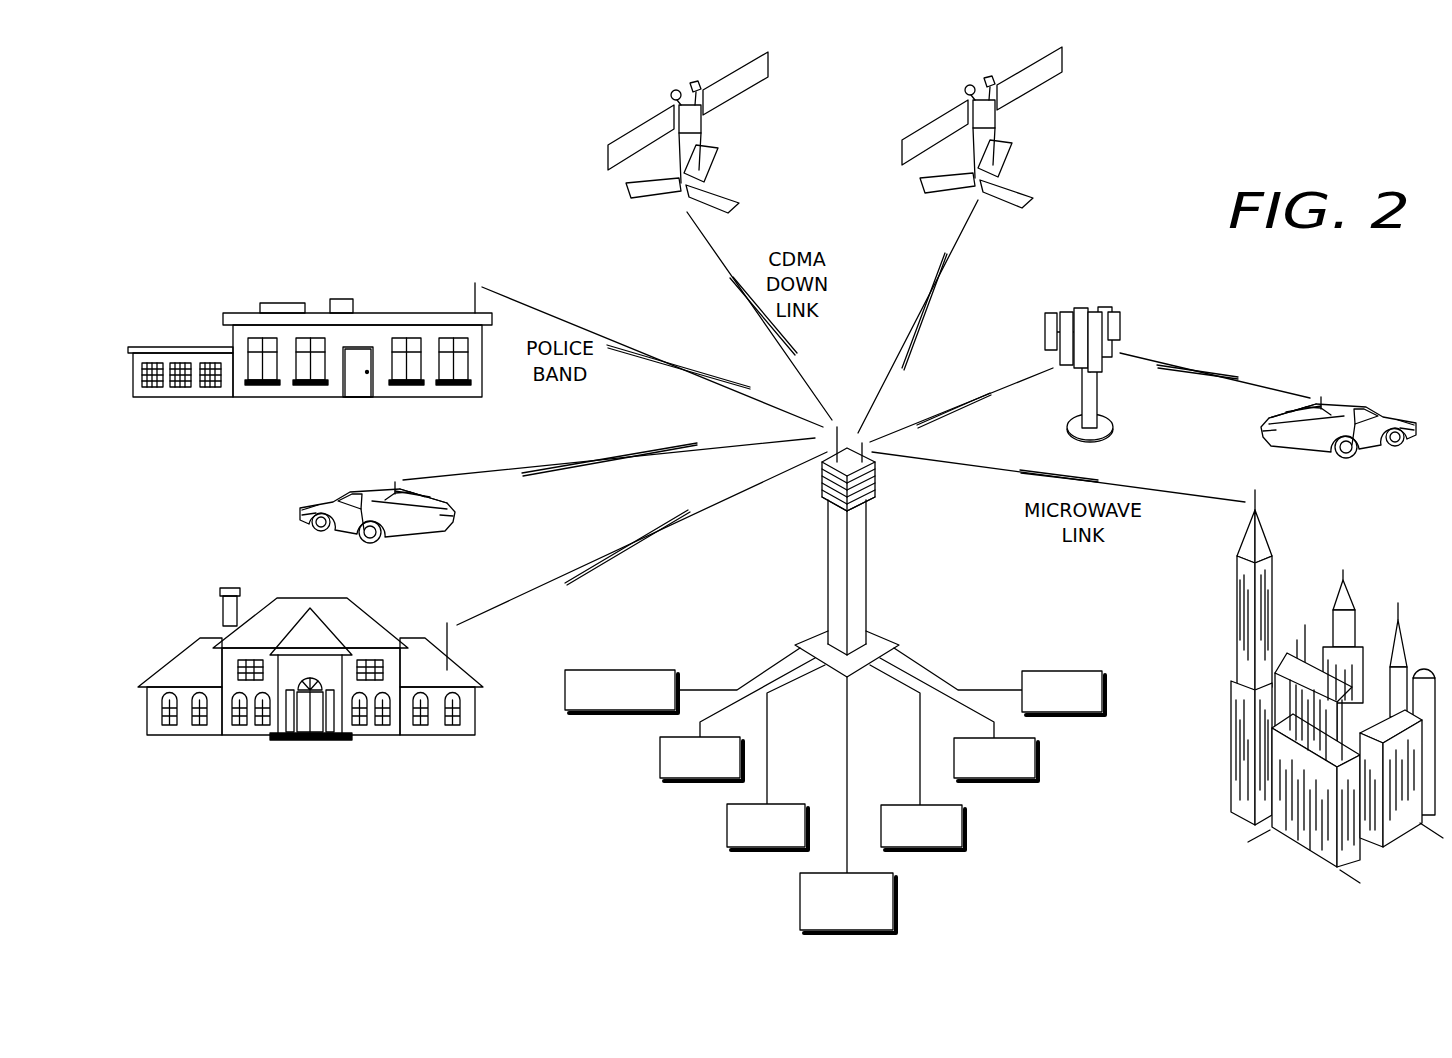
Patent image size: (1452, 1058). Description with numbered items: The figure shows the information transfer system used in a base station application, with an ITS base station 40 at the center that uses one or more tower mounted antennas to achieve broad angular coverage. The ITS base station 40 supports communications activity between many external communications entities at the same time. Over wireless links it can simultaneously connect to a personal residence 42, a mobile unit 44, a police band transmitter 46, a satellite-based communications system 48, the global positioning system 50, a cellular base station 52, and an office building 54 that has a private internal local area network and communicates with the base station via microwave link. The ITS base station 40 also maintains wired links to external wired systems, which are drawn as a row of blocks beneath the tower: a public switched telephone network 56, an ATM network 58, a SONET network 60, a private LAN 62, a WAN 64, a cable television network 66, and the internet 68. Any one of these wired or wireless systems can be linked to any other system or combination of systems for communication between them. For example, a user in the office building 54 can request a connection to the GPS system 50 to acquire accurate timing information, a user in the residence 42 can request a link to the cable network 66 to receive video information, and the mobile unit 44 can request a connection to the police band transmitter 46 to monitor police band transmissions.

The ITS base station 40 is at (832, 575).
The personal residence 42 is at (210, 725).
The mobile unit 44 is at (358, 495).
The police band transmitter 46 is at (400, 318).
The satellite-based communications system 48 is at (618, 152).
The global positioning system (GPS) 50 is at (1030, 200).
The cellular base station 52 is at (1120, 322).
The office building 54 is at (1243, 617).
The public switched telephone network (PSTN) 56 is at (1105, 690).
The ATM network 58 is at (1038, 760).
The SONET network 60 is at (965, 825).
The private LAN 62 is at (896, 897).
The WAN 64 is at (727, 825).
The cable television network 66 is at (660, 759).
The internet 68 is at (565, 690).